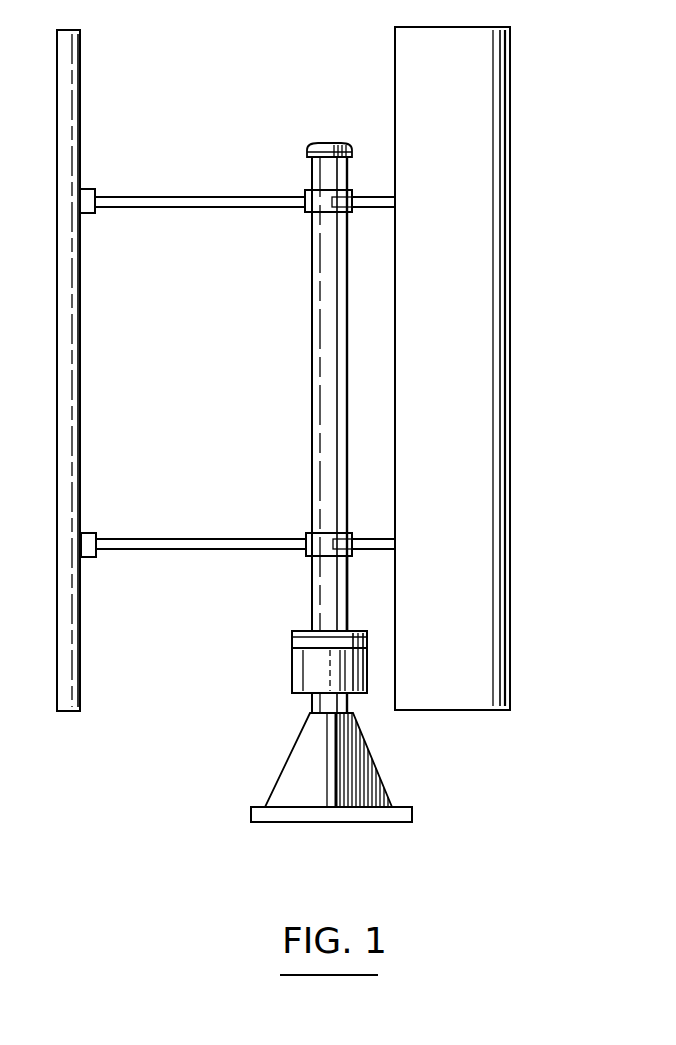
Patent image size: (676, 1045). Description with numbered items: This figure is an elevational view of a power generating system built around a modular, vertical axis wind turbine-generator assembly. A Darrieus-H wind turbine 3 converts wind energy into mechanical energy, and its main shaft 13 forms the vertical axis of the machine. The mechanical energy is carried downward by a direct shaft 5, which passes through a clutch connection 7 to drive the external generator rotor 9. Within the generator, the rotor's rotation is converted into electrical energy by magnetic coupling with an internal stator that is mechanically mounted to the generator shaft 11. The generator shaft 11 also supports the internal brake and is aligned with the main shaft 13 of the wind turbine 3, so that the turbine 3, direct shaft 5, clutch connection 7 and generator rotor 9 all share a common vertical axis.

The Darrieus-H wind turbine 3 is at (478, 336).
The main shaft of the wind turbine 13 is at (300, 318).
The direct shaft 5 is at (300, 593).
The clutch connection 7 is at (278, 641).
The external generator rotor 9 is at (278, 684).
The generator shaft 11 is at (298, 707).